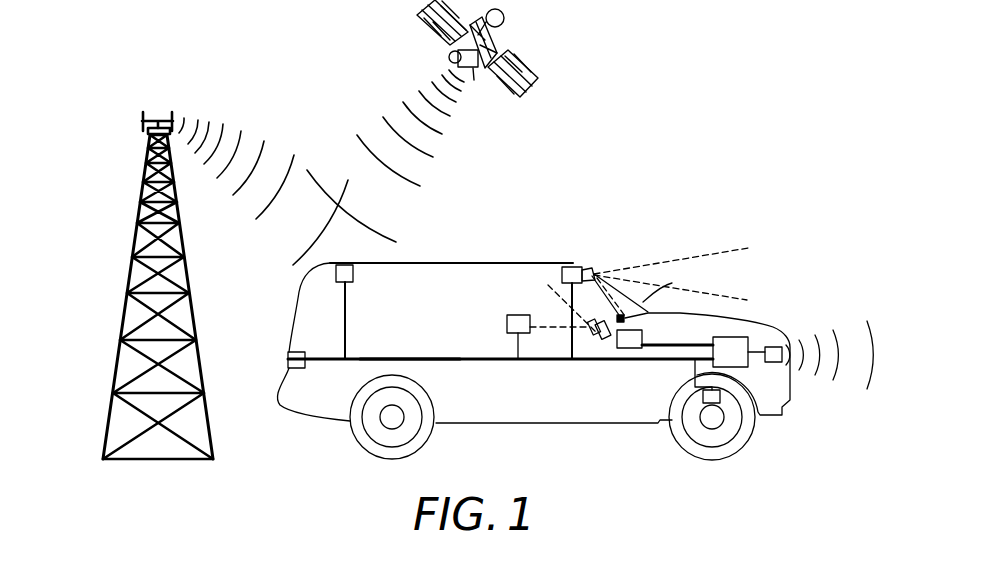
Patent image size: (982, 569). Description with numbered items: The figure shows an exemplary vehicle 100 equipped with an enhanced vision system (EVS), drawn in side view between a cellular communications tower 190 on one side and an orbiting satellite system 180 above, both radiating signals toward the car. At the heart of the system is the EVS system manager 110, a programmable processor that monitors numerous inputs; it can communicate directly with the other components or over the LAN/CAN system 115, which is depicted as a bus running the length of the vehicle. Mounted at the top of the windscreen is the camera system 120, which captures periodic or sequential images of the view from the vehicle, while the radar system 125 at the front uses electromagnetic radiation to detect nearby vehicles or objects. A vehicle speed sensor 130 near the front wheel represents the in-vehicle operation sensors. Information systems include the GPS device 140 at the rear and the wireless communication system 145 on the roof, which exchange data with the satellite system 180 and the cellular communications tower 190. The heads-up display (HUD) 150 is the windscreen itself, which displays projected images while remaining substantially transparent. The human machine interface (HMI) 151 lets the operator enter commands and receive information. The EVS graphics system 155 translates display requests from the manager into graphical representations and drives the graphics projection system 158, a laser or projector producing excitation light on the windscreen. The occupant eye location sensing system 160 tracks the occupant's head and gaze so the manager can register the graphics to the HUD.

The vehicle 100 is at (497, 262).
The EVS system manager 110 is at (746, 365).
The LAN/CAN system 115 is at (380, 358).
The camera system 120 is at (574, 265).
The radar system 125 is at (783, 347).
The vehicle speed sensor 130 is at (720, 398).
The GPS device 140 is at (287, 362).
The wireless communication system 145 is at (336, 273).
The heads-up display (HUD) 150 is at (672, 283).
The human machine interface (HMI) 151 is at (507, 326).
The EVS graphics system 155 is at (630, 348).
The graphics projection system 158 is at (623, 315).
The occupant eye location sensing system 160 is at (602, 338).
The satellite system 180 is at (452, 56).
The cellular communications tower 190 is at (127, 250).